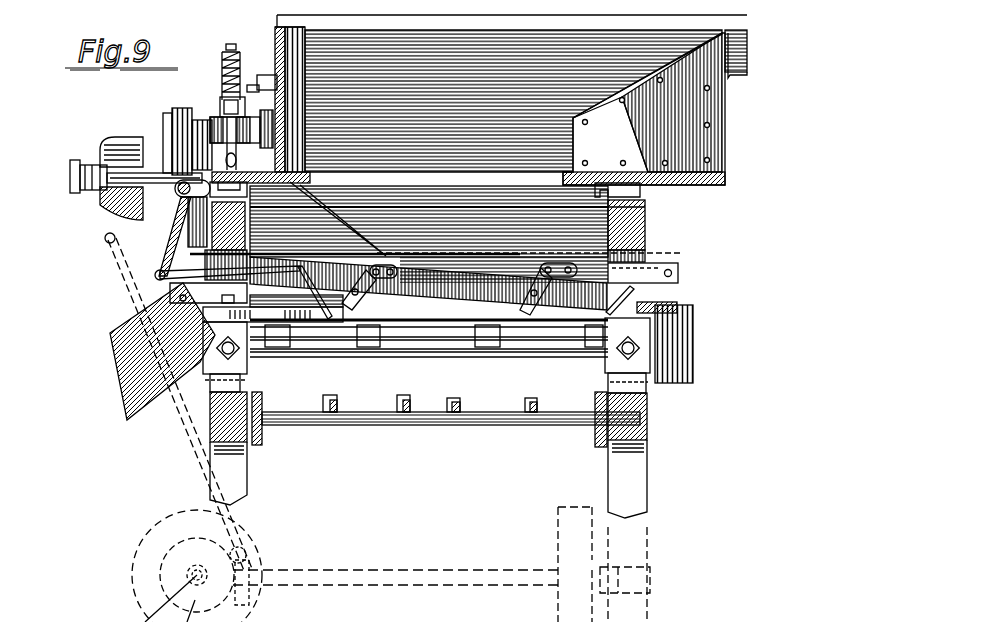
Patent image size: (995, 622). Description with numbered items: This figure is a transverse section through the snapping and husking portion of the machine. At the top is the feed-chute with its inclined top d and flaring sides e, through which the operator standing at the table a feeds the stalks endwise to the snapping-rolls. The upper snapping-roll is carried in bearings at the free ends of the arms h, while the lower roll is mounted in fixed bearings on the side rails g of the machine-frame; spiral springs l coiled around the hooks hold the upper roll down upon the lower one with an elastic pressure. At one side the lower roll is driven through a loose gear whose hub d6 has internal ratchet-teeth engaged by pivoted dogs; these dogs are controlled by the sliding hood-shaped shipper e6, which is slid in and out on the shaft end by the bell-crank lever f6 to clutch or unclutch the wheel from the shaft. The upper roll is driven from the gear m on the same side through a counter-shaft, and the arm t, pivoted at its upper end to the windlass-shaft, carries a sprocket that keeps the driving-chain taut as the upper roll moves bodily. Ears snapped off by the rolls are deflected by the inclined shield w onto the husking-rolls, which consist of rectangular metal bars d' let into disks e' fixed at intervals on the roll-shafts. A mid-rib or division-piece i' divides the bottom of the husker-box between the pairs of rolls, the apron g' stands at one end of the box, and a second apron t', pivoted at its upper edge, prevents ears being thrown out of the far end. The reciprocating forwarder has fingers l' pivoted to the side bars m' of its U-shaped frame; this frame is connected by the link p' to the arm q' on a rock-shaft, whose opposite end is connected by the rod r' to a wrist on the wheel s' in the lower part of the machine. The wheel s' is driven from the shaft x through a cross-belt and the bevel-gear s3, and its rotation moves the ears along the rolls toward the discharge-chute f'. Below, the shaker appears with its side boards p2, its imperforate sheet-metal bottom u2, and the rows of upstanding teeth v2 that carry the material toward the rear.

The flaring sides e is at (487, 97).
The inclined top d is at (751, 41).
The arm t is at (218, 72).
The gear m is at (192, 130).
The hub d6 is at (165, 150).
The sliding hood-shaped shipper e6 is at (118, 160).
The bell-crank lever f6 is at (105, 208).
The arm q' is at (175, 228).
The link p' is at (195, 261).
The mid-rib or division-piece i' is at (208, 294).
The chute f' is at (142, 351).
The arms h is at (386, 256).
The apron g' is at (599, 228).
The side rails g is at (447, 231).
The table a is at (683, 185).
The spiral springs l is at (371, 287).
The teeth or fingers l' is at (548, 289).
The second apron t' is at (634, 300).
The side bars m' is at (669, 282).
The disks e' is at (434, 357).
The inclined shield w is at (313, 322).
The rectangular metal bars d' is at (328, 328).
The upstanding teeth v2 is at (338, 395).
The imperforate sheet-metal bottom u2 is at (395, 420).
The side boards p2 is at (265, 440).
The rod r' is at (180, 405).
The wheel s' is at (167, 566).
The shaft x is at (390, 573).
The bevel-gear s3 is at (235, 603).